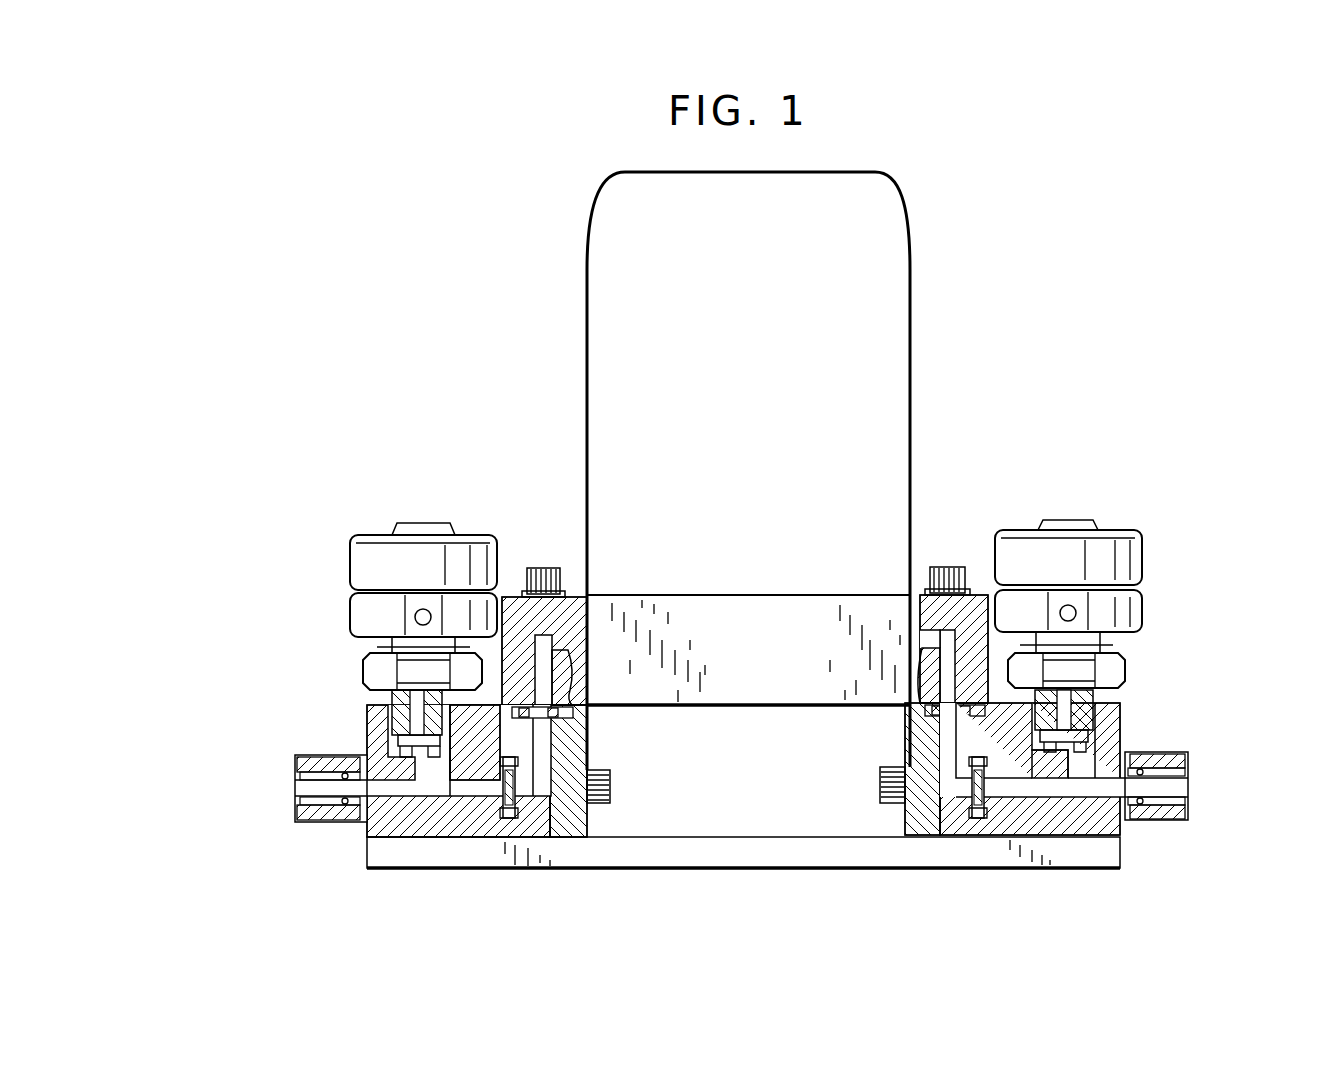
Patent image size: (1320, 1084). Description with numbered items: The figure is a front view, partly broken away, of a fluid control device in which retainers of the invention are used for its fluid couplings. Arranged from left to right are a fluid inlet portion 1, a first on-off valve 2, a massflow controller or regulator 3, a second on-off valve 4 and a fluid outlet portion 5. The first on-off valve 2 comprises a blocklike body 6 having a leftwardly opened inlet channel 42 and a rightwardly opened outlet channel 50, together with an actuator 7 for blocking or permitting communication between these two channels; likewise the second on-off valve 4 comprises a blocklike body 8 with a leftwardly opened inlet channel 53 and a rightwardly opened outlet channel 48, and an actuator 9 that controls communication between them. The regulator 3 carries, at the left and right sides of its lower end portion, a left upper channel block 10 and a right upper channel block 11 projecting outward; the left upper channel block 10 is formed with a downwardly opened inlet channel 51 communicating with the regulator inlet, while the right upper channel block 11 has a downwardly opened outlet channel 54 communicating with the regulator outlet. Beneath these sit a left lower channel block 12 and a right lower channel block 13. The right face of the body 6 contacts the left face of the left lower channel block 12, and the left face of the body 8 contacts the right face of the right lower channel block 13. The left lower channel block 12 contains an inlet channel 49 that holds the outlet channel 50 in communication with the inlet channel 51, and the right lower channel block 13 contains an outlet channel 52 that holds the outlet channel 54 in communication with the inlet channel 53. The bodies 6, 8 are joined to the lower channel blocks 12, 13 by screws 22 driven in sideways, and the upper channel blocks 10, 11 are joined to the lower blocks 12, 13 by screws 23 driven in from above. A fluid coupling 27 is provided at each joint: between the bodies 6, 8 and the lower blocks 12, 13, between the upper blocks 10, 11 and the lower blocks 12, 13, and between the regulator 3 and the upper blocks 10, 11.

The fluid inlet portion 1 is at (295, 800).
The first on-off valve 2 is at (397, 569).
The massflow controller (regulator) 3 is at (887, 352).
The second on-off valve 4 is at (1096, 572).
The fluid outlet portion 5 is at (1188, 800).
The blocklike body 6 is at (375, 742).
The actuator 7 is at (358, 617).
The blocklike body 8 is at (1110, 725).
The actuator 9 is at (1133, 612).
The left upper channel block 10 is at (517, 620).
The right upper channel block 11 is at (980, 585).
The left lower channel block 12 is at (570, 800).
The right lower channel block 13 is at (927, 815).
The screws 22 is at (612, 786).
The screws 23 is at (553, 568).
The fluid coupling 27 is at (520, 772).
The inlet channel 42 is at (405, 790).
The outlet channel 48 is at (1095, 790).
The inlet channel 49 is at (540, 790).
The outlet channel 50 is at (470, 800).
The inlet channel 51 is at (563, 678).
The outlet channel 52 is at (955, 805).
The inlet channel 53 is at (1023, 790).
The outlet channel 54 is at (935, 675).